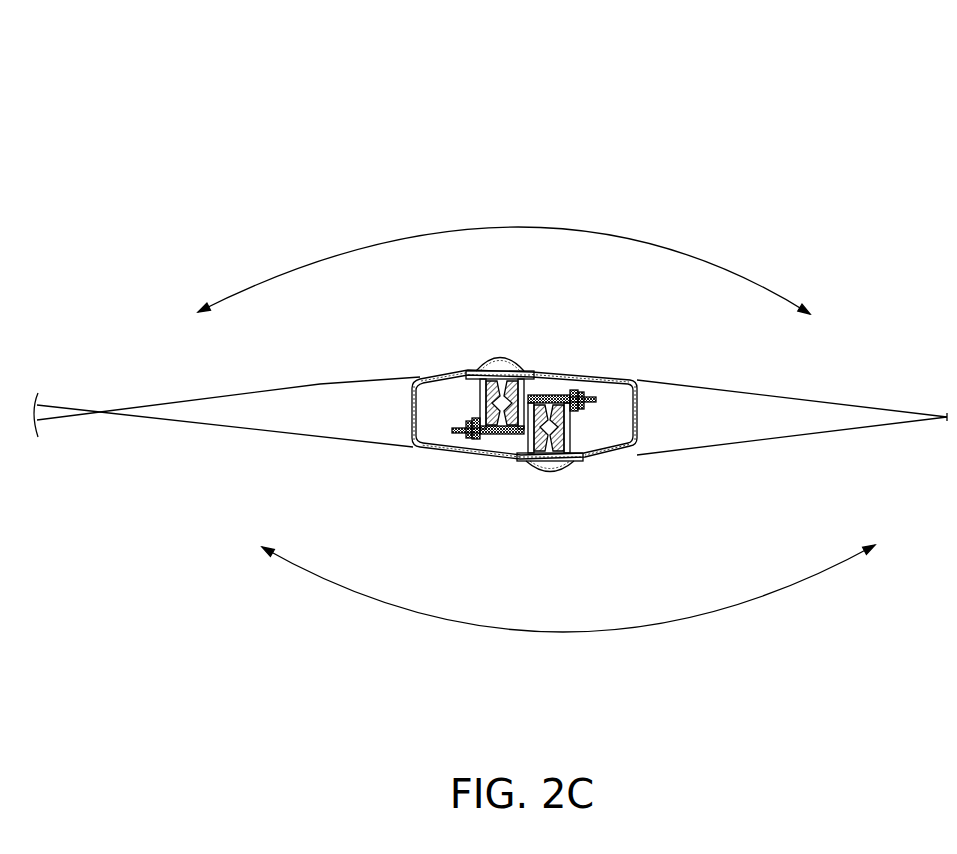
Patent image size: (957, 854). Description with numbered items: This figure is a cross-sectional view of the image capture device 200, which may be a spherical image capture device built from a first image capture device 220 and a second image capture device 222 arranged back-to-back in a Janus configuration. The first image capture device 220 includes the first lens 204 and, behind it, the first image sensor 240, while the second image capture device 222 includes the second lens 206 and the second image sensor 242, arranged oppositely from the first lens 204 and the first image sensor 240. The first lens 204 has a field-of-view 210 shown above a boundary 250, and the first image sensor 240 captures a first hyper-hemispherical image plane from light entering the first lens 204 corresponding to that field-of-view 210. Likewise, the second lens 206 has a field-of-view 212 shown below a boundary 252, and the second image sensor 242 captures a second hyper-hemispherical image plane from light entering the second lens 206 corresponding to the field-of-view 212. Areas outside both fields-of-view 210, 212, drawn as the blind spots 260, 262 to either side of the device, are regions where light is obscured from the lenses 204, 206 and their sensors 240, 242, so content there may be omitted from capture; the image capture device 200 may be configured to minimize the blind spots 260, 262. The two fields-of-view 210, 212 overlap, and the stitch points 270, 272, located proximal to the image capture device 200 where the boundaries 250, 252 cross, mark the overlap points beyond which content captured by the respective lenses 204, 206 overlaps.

The image capture device 200 is at (821, 145).
The first lens 204 is at (505, 358).
The second lens 206 is at (550, 472).
The first field-of-view 210 is at (558, 227).
The second field-of-view 212 is at (570, 633).
The first image capture device 220 is at (470, 368).
The second image capture device 222 is at (574, 462).
The first image sensor 240 is at (504, 433).
The second image sensor 242 is at (548, 397).
The boundary 250 is at (261, 390).
The boundary 252 is at (297, 437).
The blind spot 260 is at (345, 413).
The blind spot 262 is at (690, 413).
The stitch point 270 is at (100, 415).
The stitch point 272 is at (946, 420).